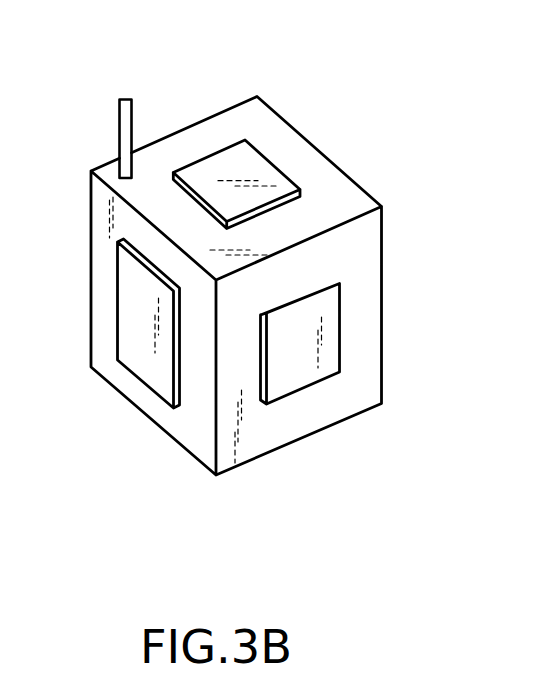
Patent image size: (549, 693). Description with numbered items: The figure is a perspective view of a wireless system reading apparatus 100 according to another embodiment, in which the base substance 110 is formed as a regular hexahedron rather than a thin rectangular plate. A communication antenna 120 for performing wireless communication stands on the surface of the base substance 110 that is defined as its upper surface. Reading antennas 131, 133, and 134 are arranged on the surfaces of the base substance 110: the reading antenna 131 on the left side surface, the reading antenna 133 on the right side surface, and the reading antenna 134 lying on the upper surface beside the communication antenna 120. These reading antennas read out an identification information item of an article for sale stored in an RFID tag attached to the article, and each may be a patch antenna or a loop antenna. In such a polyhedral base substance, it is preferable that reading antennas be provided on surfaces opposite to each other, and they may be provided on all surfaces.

The wireless system reading apparatus 100 is at (234, 237).
The base substance 110 is at (344, 197).
The communication antenna 120 is at (126, 99).
The reading antenna 131 is at (120, 303).
The reading antenna 133 is at (340, 328).
The reading antenna 134 is at (274, 164).